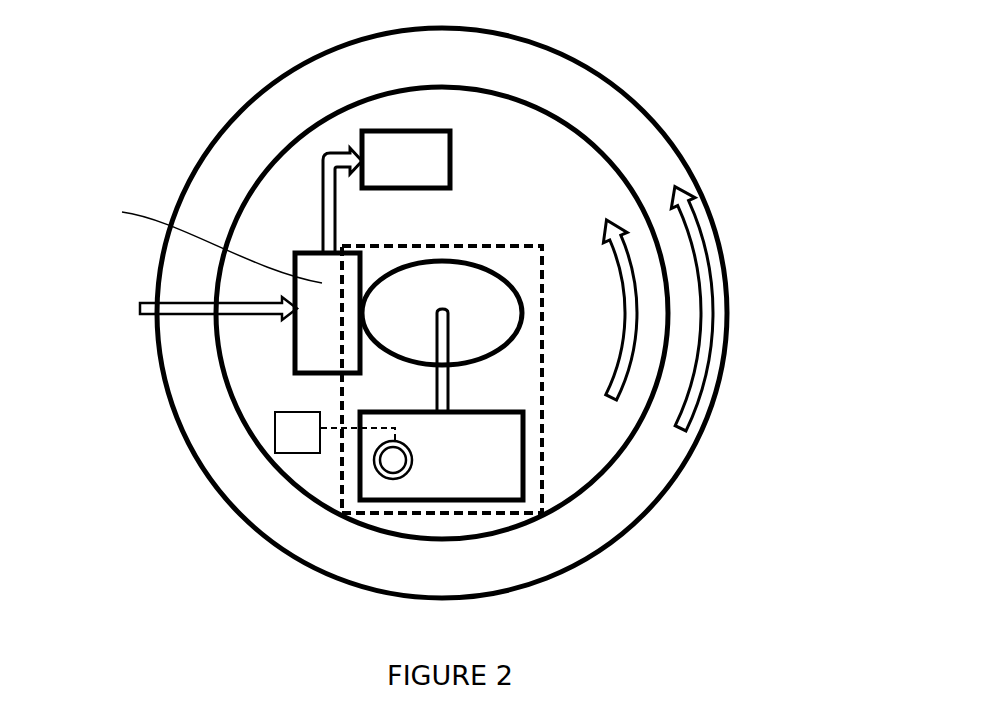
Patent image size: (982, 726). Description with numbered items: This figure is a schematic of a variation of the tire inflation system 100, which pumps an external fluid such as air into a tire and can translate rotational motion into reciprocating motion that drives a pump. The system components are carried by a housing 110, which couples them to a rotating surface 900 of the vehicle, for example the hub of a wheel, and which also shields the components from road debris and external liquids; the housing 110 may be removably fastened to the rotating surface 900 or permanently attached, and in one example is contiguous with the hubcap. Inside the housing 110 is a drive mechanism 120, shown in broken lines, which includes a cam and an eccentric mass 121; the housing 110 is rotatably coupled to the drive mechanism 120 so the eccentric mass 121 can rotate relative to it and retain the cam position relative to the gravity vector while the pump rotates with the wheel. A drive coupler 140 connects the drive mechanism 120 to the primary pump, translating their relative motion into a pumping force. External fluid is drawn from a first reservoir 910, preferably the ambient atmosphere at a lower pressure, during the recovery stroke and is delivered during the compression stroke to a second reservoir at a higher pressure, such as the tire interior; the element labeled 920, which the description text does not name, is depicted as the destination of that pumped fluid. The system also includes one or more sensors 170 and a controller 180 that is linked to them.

The tire inflation system 100 is at (190, 55).
The housing 110 is at (530, 125).
The drive mechanism 120 is at (545, 300).
The eccentric mass 121 is at (500, 473).
The drive coupler 140 is at (492, 330).
The sensors 170 is at (393, 460).
The controller 180 is at (300, 453).
The rotating surface 900 is at (585, 93).
The first reservoir 910 is at (182, 309).
The output device 920 is at (383, 152).